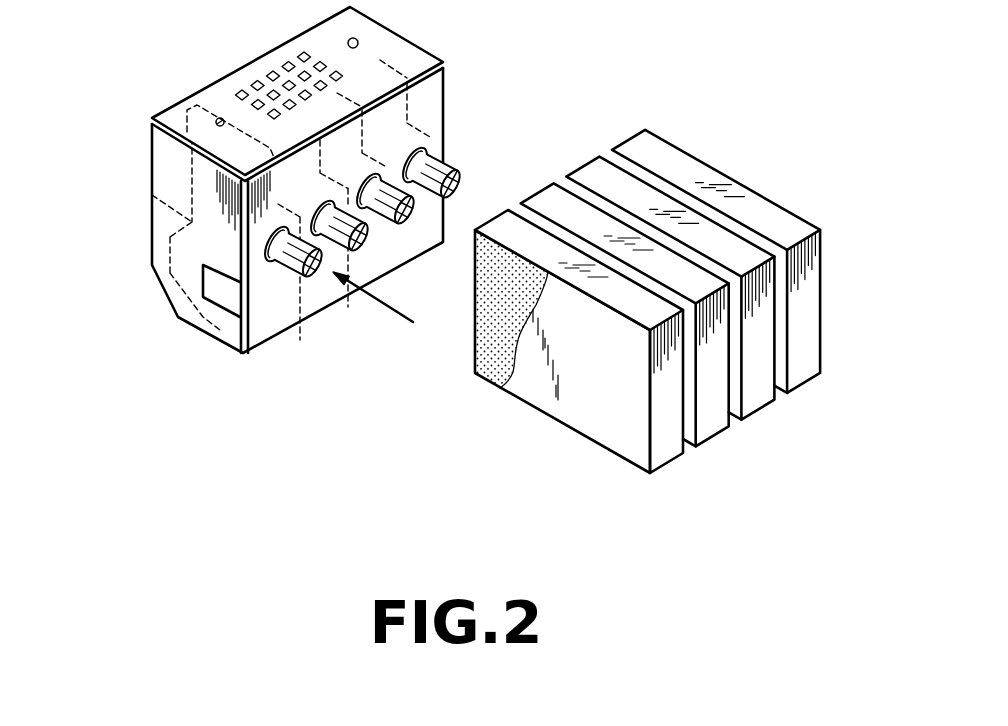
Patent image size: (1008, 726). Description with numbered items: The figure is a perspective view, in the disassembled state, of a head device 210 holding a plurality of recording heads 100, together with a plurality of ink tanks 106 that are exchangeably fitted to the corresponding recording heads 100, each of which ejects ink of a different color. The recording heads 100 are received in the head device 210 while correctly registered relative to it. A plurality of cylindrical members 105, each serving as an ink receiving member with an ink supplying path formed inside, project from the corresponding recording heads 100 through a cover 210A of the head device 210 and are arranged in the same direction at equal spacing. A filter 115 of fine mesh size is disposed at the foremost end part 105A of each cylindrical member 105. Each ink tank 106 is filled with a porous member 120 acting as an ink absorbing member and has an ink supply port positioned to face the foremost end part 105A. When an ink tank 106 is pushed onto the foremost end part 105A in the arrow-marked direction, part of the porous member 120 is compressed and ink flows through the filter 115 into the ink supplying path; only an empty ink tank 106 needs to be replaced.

The recording head 100 is at (150, 183).
The head device 210 is at (412, 30).
The cover 210A is at (260, 315).
The cylindrical member 105 is at (440, 163).
The foremost end part 105A is at (303, 276).
The filter 115 is at (409, 216).
The ink tank 106 is at (651, 324).
The porous member 120 is at (490, 355).